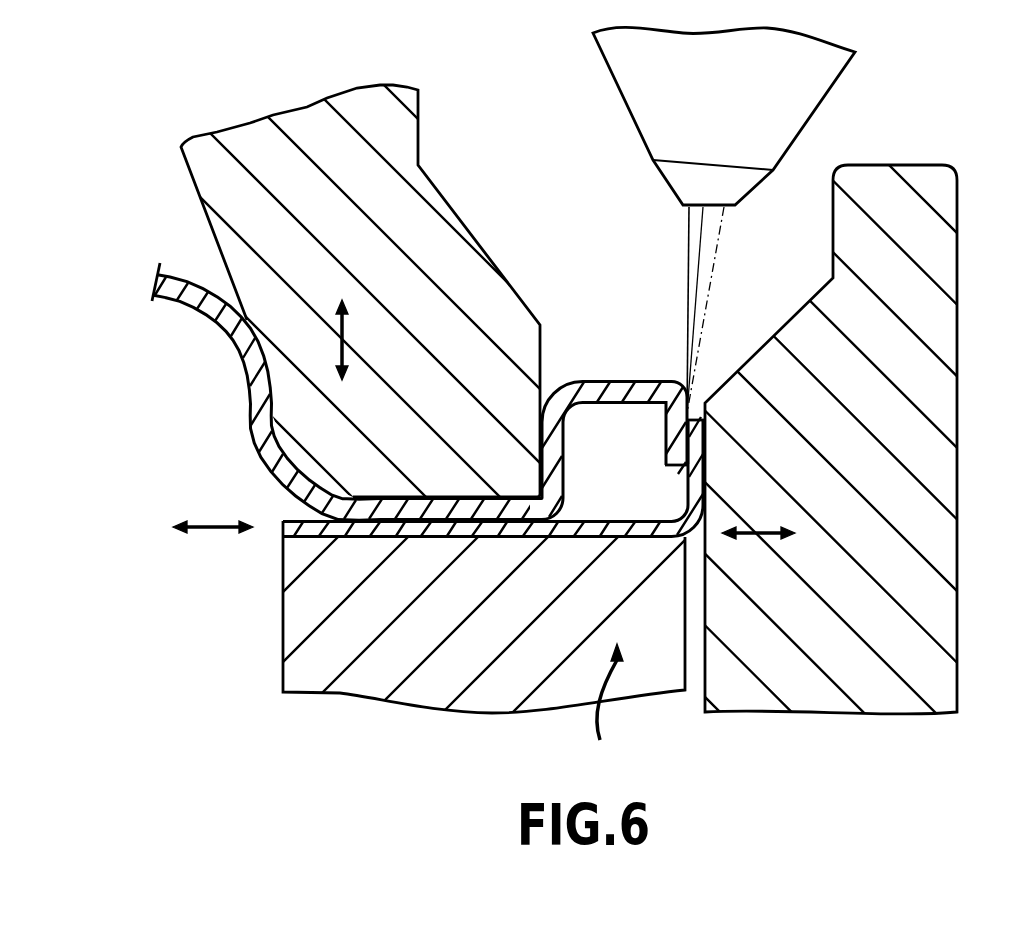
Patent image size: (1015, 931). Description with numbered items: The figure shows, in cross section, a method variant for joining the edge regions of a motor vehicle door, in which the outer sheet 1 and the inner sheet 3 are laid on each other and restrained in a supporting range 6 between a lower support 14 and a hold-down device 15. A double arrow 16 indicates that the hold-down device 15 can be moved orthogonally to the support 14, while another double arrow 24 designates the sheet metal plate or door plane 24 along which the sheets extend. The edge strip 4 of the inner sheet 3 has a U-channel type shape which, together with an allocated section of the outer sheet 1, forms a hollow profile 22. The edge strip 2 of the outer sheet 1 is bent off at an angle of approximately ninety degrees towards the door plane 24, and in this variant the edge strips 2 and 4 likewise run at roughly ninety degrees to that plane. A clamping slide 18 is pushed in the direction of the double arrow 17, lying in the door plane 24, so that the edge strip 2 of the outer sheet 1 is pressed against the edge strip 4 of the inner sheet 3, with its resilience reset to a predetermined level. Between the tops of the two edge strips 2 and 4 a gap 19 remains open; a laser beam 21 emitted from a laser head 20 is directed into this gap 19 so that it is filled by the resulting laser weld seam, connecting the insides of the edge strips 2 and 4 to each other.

The outer sheet 1 is at (565, 527).
The edge strip 2 is at (693, 452).
The inner sheet 3 is at (270, 452).
The edge strip 4 is at (677, 456).
The supporting range 6 is at (610, 698).
The support 14 is at (410, 630).
The hold-down device 15 is at (233, 190).
The double arrow 16 is at (340, 347).
The double arrow 17 is at (758, 533).
The clamping slide 18 is at (928, 463).
The gap 19 is at (688, 440).
The laser head 20 is at (806, 88).
The laser beam 21 is at (718, 270).
The hollow profile 22 is at (606, 420).
The sheet plane 24 is at (210, 525).